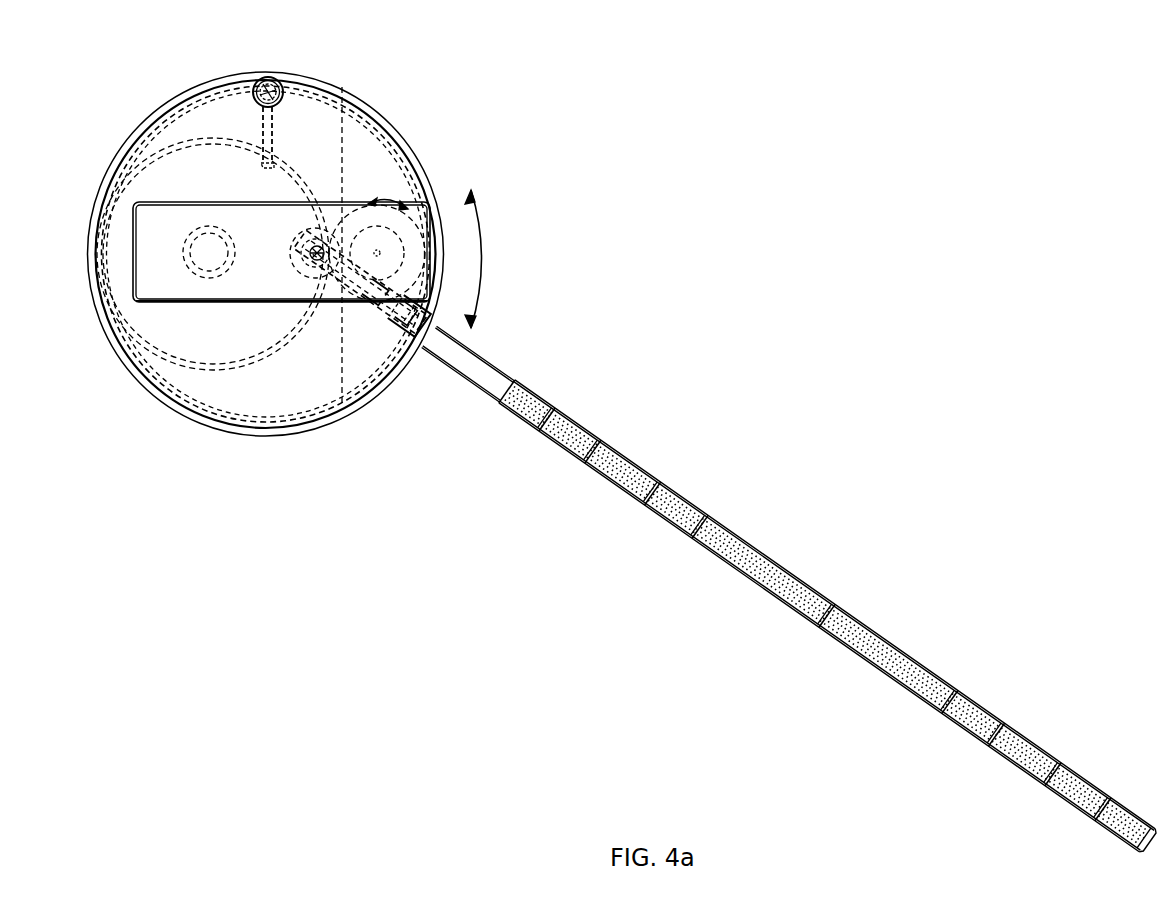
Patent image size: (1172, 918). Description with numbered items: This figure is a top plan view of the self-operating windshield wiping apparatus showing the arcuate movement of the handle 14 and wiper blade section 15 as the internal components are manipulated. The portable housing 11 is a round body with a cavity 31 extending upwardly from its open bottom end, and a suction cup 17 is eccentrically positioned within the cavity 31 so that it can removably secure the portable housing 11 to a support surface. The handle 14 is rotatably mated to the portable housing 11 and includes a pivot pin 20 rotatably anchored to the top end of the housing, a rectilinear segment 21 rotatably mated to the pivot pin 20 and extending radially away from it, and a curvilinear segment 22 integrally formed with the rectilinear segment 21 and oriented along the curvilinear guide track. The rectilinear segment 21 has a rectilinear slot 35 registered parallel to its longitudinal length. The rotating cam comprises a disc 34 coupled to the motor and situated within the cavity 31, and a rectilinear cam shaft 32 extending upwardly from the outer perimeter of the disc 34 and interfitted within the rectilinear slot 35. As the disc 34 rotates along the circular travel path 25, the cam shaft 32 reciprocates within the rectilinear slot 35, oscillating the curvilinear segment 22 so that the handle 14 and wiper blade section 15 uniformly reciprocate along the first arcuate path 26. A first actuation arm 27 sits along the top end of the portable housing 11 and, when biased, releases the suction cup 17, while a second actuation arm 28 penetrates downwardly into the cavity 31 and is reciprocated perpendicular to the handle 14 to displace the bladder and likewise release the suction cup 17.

The portable housing 11 is at (160, 397).
The handle 14 is at (488, 378).
The wiper blade section 15 is at (920, 663).
The suction cup 17 is at (168, 177).
The pivot pin 20 is at (315, 250).
The rectilinear segment 21 is at (372, 318).
The curvilinear segment 22 is at (417, 347).
The circular travel path 25 is at (372, 205).
The first arcuate path 26 is at (470, 203).
The first actuation arm 27 is at (147, 258).
The second actuation arm 28 is at (253, 80).
The cavity 31 is at (195, 127).
The rectilinear cam shaft 32 is at (345, 285).
The disc 34 is at (393, 256).
The rectilinear slot 35 is at (352, 305).